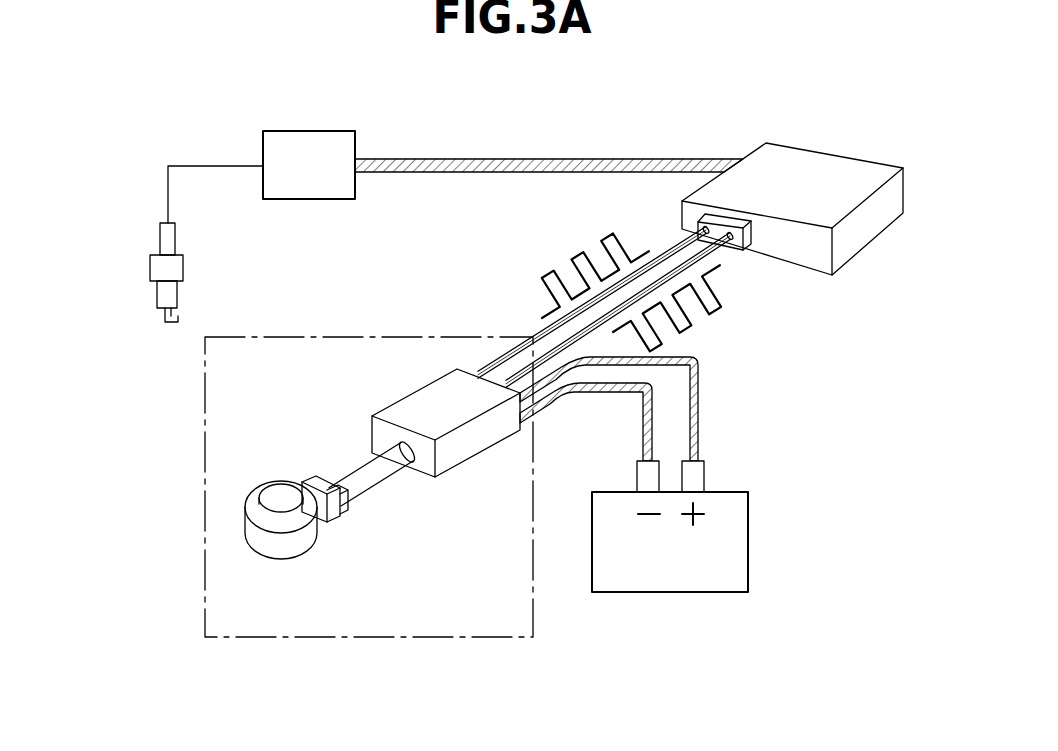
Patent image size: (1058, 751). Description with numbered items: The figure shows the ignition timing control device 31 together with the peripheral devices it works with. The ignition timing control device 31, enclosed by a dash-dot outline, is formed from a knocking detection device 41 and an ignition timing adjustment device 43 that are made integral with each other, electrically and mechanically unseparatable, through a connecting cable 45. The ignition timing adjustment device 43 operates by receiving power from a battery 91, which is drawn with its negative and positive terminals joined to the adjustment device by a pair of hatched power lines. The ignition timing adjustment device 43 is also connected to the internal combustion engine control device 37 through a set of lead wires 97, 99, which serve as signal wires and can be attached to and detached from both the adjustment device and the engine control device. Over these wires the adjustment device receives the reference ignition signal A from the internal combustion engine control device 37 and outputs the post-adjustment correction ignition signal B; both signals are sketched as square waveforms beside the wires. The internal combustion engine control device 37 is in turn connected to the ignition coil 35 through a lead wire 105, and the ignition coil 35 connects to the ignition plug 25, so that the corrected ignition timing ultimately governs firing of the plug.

The ignition plug 25 is at (163, 264).
The ignition coil 35 is at (303, 199).
The lead wire 105 is at (410, 172).
The internal combustion engine control device 37 is at (833, 155).
The lead wire 97 is at (668, 250).
The lead wire 99 is at (707, 252).
The reference ignition signal A is at (549, 271).
The correction ignition signal B is at (721, 307).
The ignition timing control device 31 is at (400, 514).
The ignition timing adjustment device 43 is at (418, 388).
The connecting cable 45 is at (352, 468).
The knocking detection device 41 is at (278, 494).
The battery 91 is at (735, 551).